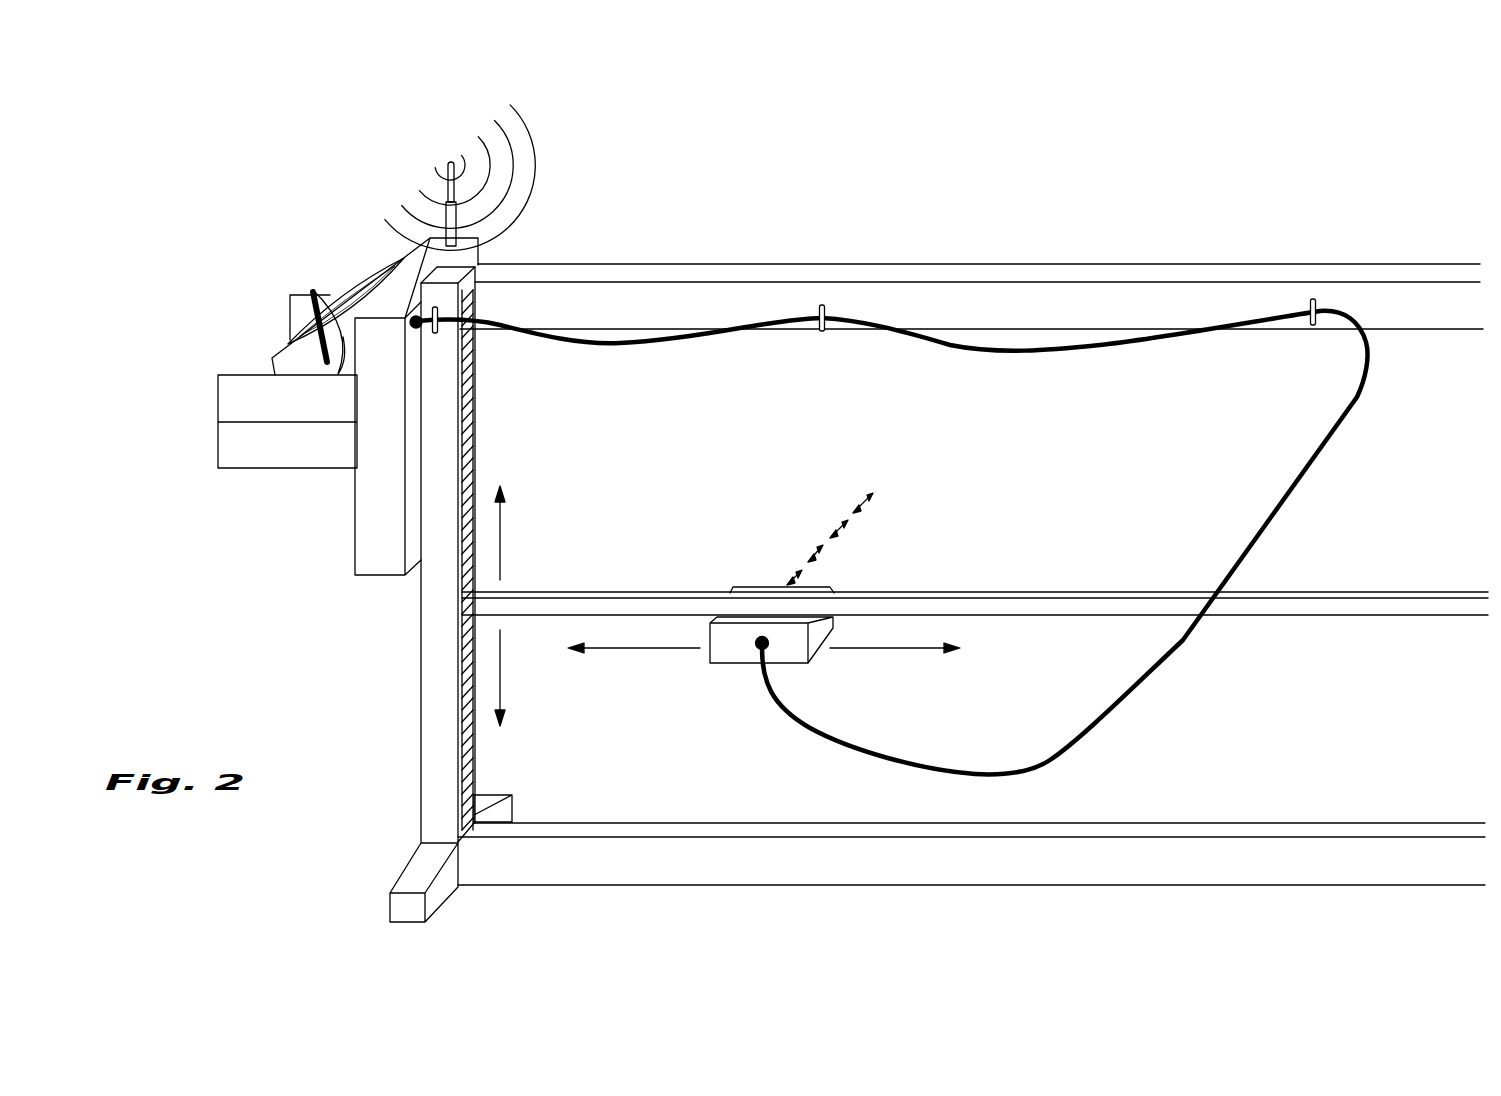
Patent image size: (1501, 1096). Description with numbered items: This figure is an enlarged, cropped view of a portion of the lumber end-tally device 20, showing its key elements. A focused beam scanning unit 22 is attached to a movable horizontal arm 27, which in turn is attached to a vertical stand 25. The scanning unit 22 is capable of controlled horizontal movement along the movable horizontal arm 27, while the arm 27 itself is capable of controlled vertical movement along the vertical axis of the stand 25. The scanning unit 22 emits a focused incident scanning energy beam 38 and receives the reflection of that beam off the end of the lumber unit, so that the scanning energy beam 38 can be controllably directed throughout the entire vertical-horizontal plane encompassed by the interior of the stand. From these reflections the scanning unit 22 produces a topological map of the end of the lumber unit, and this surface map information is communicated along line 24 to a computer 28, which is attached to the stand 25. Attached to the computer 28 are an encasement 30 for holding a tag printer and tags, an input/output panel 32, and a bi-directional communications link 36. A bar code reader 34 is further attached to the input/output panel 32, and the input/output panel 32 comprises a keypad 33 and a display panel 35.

The device 20 is at (232, 190).
The focused beam scanning unit 22 is at (723, 658).
The line 24 is at (883, 748).
The stand 25 is at (432, 697).
The movable horizontal arm 27 is at (963, 610).
The computer 28 is at (363, 545).
The encasement 30 is at (225, 402).
The input/output panel 32 is at (277, 367).
The keypad 33 is at (320, 290).
The bar code reader 34 is at (310, 328).
The display panel 35 is at (380, 268).
The bi-directional communications link 36 is at (458, 177).
The focused incident scanning energy beam 38 is at (837, 532).